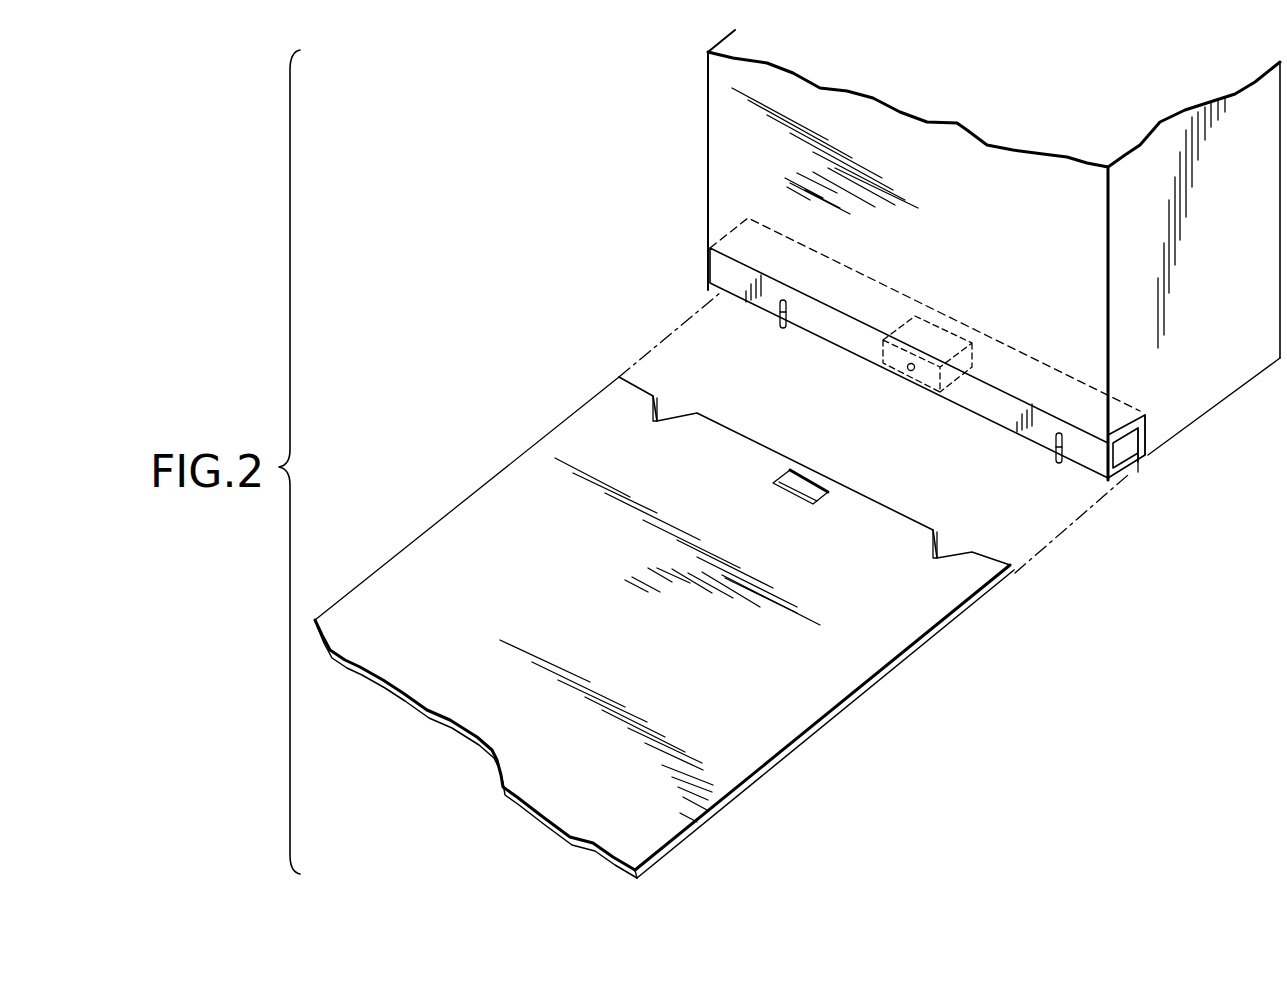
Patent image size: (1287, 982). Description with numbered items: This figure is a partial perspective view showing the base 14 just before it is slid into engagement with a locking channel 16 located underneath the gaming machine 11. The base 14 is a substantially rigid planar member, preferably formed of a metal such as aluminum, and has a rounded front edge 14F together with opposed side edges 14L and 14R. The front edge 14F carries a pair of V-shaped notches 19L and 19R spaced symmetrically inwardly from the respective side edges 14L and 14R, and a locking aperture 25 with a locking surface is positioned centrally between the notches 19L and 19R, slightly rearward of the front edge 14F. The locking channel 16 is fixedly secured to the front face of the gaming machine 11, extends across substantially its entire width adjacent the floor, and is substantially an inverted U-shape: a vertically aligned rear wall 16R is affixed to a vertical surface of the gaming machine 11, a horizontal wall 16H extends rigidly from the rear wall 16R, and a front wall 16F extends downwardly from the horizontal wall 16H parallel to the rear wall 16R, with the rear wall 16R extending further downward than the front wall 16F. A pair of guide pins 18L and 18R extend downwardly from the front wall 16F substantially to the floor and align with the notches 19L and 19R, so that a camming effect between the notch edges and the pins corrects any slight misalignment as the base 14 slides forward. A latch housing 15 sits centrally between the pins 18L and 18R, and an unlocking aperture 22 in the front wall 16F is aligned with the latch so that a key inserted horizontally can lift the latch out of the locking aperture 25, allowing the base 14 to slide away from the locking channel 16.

The gaming machine 11 is at (1226, 399).
The base 14 is at (693, 620).
The front edge 14F is at (722, 423).
The side edge 14L is at (455, 508).
The side edge 14R is at (790, 758).
The latch housing 15 is at (943, 348).
The locking channel 16 is at (1148, 455).
The front wall 16F is at (716, 268).
The horizontal wall 16H is at (1112, 440).
The rear wall 16R is at (1147, 423).
The guide pin 18L is at (782, 326).
The guide pin 18R is at (1058, 465).
The V-shaped notch 19L is at (660, 408).
The V-shaped notch 19R is at (938, 543).
The unlocking aperture 22 is at (908, 372).
The locking aperture 25 is at (795, 477).